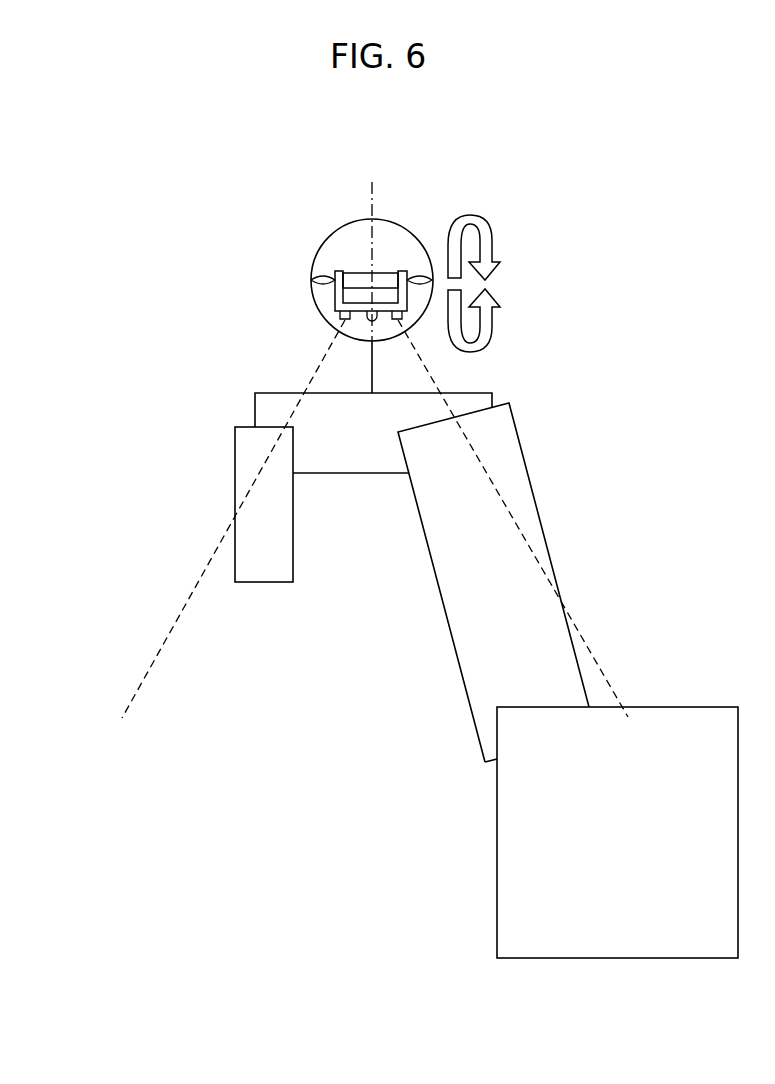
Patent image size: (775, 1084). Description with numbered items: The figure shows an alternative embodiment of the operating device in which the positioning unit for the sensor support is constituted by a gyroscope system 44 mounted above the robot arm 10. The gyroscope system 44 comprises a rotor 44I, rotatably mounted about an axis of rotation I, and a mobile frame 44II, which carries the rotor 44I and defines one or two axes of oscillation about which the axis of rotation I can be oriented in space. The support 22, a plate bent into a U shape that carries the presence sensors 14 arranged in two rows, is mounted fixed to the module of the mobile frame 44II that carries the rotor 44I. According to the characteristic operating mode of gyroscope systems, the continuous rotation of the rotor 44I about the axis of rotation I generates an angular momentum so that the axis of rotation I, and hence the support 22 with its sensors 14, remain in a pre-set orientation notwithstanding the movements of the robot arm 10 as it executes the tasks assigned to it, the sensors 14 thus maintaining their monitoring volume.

The axis of rotation I is at (366, 198).
The gyroscope system 44 is at (412, 222).
The support 22 is at (340, 277).
The rotor 44I is at (325, 284).
The mobile frame 44II is at (328, 320).
The presence sensor 14 is at (400, 318).
The robot arm 10 is at (438, 640).